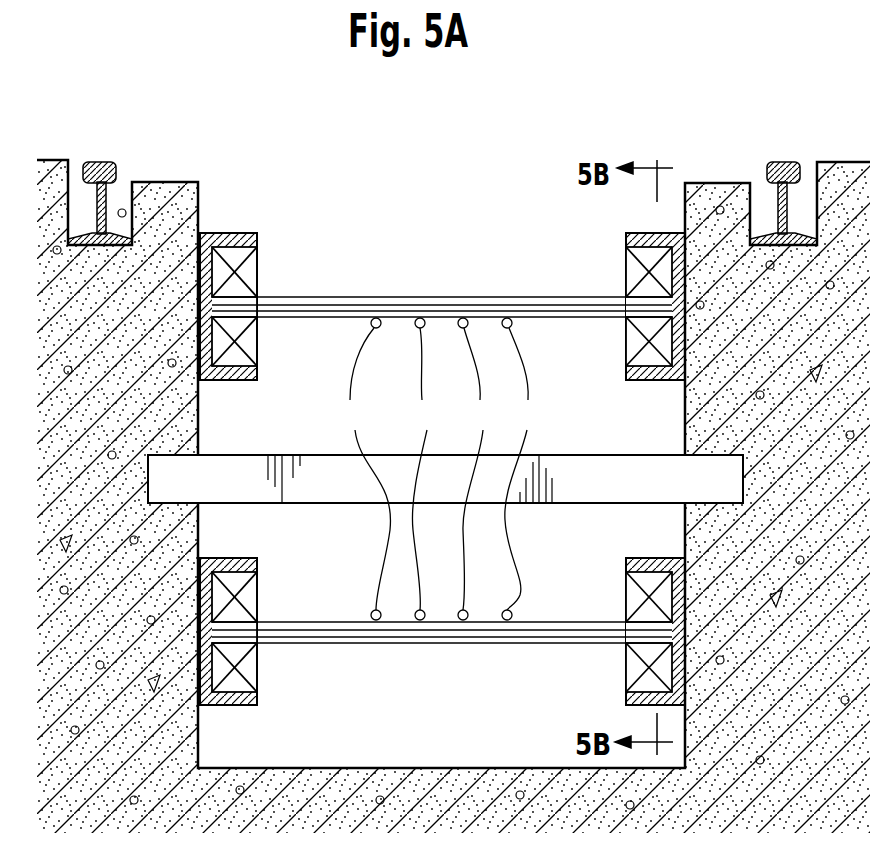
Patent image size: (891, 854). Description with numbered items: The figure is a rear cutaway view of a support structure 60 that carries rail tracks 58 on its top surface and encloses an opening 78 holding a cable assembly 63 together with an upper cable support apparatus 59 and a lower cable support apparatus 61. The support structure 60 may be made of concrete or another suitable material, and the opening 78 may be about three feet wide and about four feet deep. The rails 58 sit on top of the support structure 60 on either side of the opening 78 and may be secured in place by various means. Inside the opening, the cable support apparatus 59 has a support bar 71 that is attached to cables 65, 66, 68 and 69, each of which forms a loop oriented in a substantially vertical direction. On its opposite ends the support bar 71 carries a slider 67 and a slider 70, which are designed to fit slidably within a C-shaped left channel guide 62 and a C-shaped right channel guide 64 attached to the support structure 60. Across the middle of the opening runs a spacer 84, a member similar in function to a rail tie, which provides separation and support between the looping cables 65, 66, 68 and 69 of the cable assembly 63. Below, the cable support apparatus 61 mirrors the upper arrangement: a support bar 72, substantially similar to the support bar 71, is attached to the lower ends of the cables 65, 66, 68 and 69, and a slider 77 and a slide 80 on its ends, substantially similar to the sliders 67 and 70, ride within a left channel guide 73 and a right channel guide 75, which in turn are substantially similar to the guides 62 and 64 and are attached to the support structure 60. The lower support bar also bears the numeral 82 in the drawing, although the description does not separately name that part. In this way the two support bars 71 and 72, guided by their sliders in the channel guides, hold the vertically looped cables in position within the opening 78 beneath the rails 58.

The rail tracks 58 is at (93, 160).
The support structure 60 is at (162, 182).
The left channel guide 62 is at (223, 233).
The slider 67 is at (257, 260).
The support bar 71 is at (307, 297).
The cable support apparatus 59 is at (412, 277).
The opening 78 is at (465, 277).
The right channel guide 64 is at (626, 236).
The slider 70 is at (626, 272).
The cable assembly 63 is at (330, 352).
The cable 65 is at (364, 469).
The cable 66 is at (425, 469).
The cable 68 is at (478, 469).
The cable 69 is at (523, 469).
The spacer 84 is at (268, 503).
The left channel guide 73 is at (257, 568).
The slider 77 is at (257, 593).
The support bar 72 is at (303, 644).
The lower shaft core 82 is at (408, 644).
The cable support apparatus 61 is at (475, 683).
The right channel guide 75 is at (643, 558).
The slide 80 is at (633, 600).